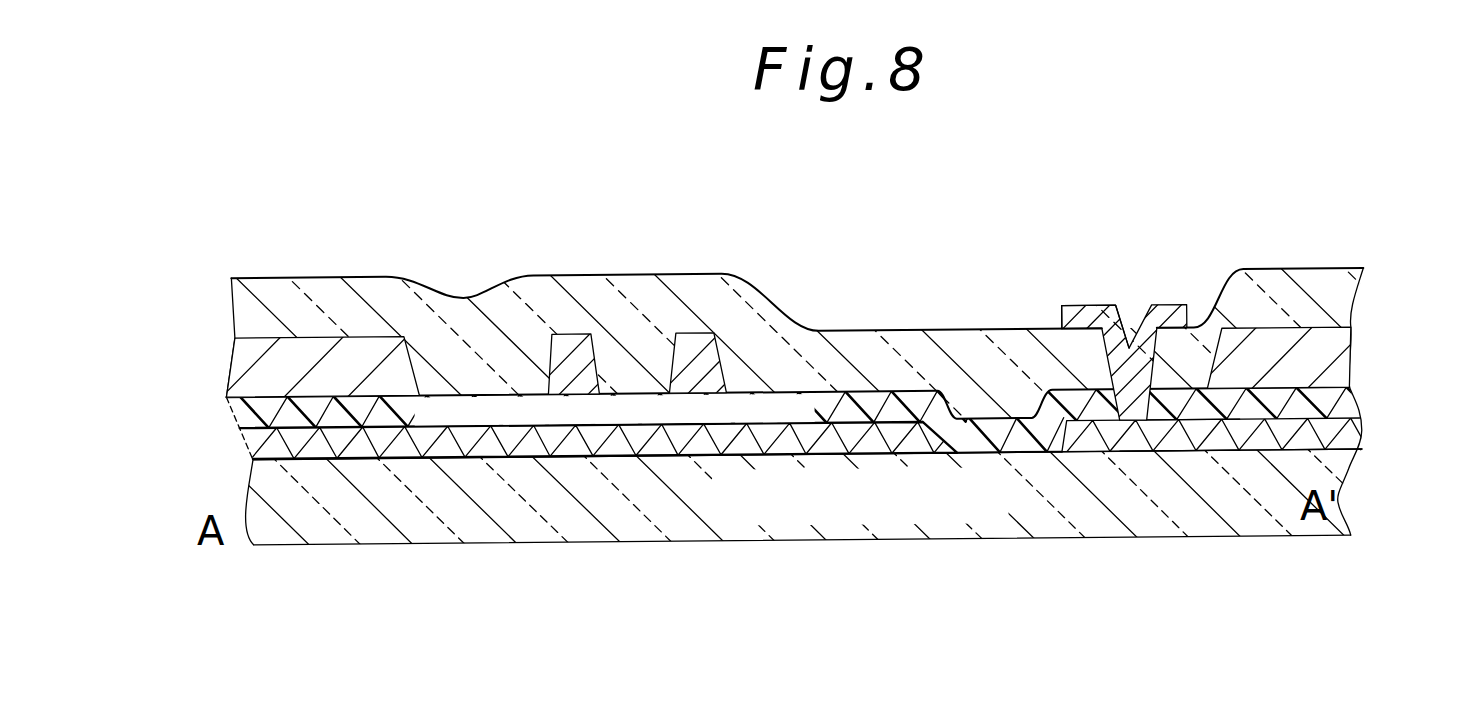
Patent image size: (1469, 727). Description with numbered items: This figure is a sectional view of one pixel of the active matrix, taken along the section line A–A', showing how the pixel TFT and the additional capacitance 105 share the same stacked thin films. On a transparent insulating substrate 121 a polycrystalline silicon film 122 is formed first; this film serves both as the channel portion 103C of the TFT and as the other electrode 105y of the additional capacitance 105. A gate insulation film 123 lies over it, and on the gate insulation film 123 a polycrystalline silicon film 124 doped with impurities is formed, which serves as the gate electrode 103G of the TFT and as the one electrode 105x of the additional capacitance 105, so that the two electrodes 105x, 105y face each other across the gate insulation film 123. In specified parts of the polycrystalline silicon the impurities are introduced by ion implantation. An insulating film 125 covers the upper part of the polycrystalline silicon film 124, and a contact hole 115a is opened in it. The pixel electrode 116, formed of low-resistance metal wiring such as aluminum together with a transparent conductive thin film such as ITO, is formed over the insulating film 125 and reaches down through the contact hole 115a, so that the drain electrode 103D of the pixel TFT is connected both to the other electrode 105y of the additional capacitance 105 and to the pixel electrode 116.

The additional capacitance 105 is at (304, 274).
The one electrode of the additional capacitance 105x is at (250, 352).
The other electrode of the additional capacitance 105y is at (284, 444).
The gate electrode 103G is at (688, 322).
The channel portion 103C is at (616, 447).
The drain electrode 103D is at (1180, 442).
The contact hole 115a is at (1125, 305).
The pixel electrode 116 is at (1168, 304).
The transparent insulating substrate 121 is at (780, 542).
The polycrystalline silicon film 122 is at (668, 443).
The gate insulation film 123 is at (838, 398).
The polycrystalline silicon film doped with impurities 124 is at (318, 278).
The insulating film 125 is at (762, 317).